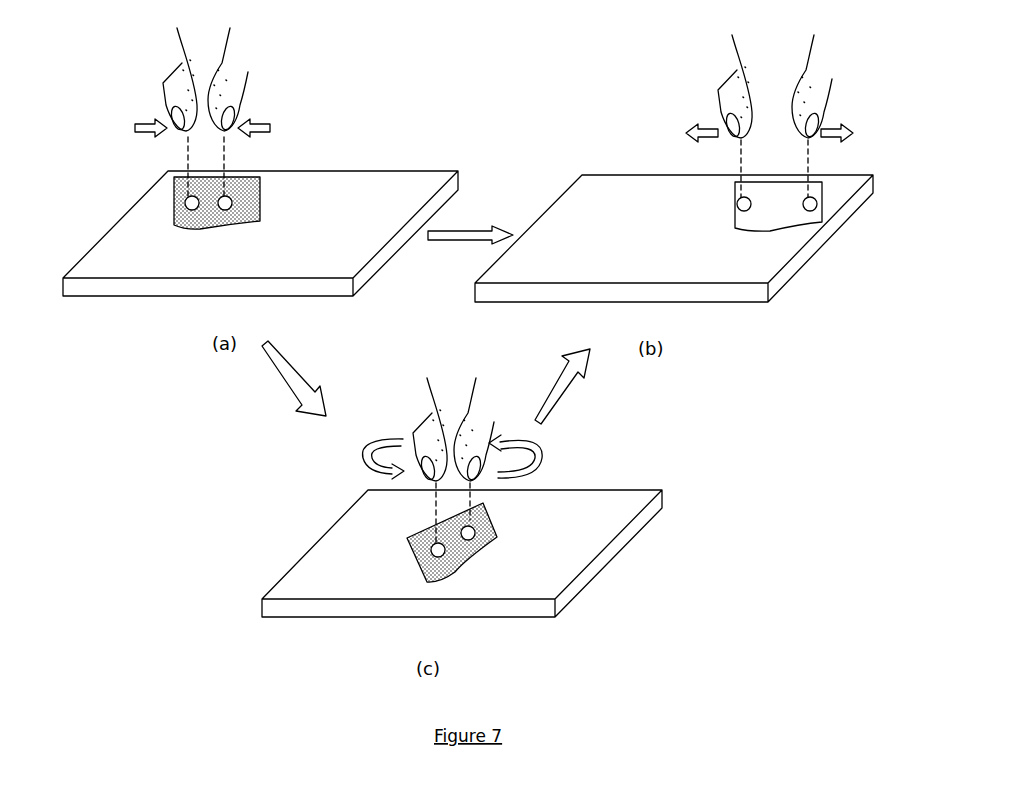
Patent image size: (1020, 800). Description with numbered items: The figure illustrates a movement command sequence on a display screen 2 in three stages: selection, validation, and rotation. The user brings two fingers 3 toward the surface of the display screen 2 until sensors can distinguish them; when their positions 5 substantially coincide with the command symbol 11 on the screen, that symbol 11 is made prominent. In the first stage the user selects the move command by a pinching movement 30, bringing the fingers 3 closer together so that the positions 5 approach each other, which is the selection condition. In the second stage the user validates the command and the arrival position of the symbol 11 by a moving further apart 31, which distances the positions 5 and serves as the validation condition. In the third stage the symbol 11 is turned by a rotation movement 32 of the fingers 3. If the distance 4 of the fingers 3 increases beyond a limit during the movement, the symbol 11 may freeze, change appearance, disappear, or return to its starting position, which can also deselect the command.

The display screen 2 is at (458, 171).
The fingers 3 is at (158, 72).
The distance 4 is at (188, 155).
The positions 5 is at (184, 203).
The command symbol 11 is at (260, 203).
The pinching movement 30 is at (135, 128).
The moving further apart 31 is at (690, 132).
The rotation movement 32 is at (365, 456).